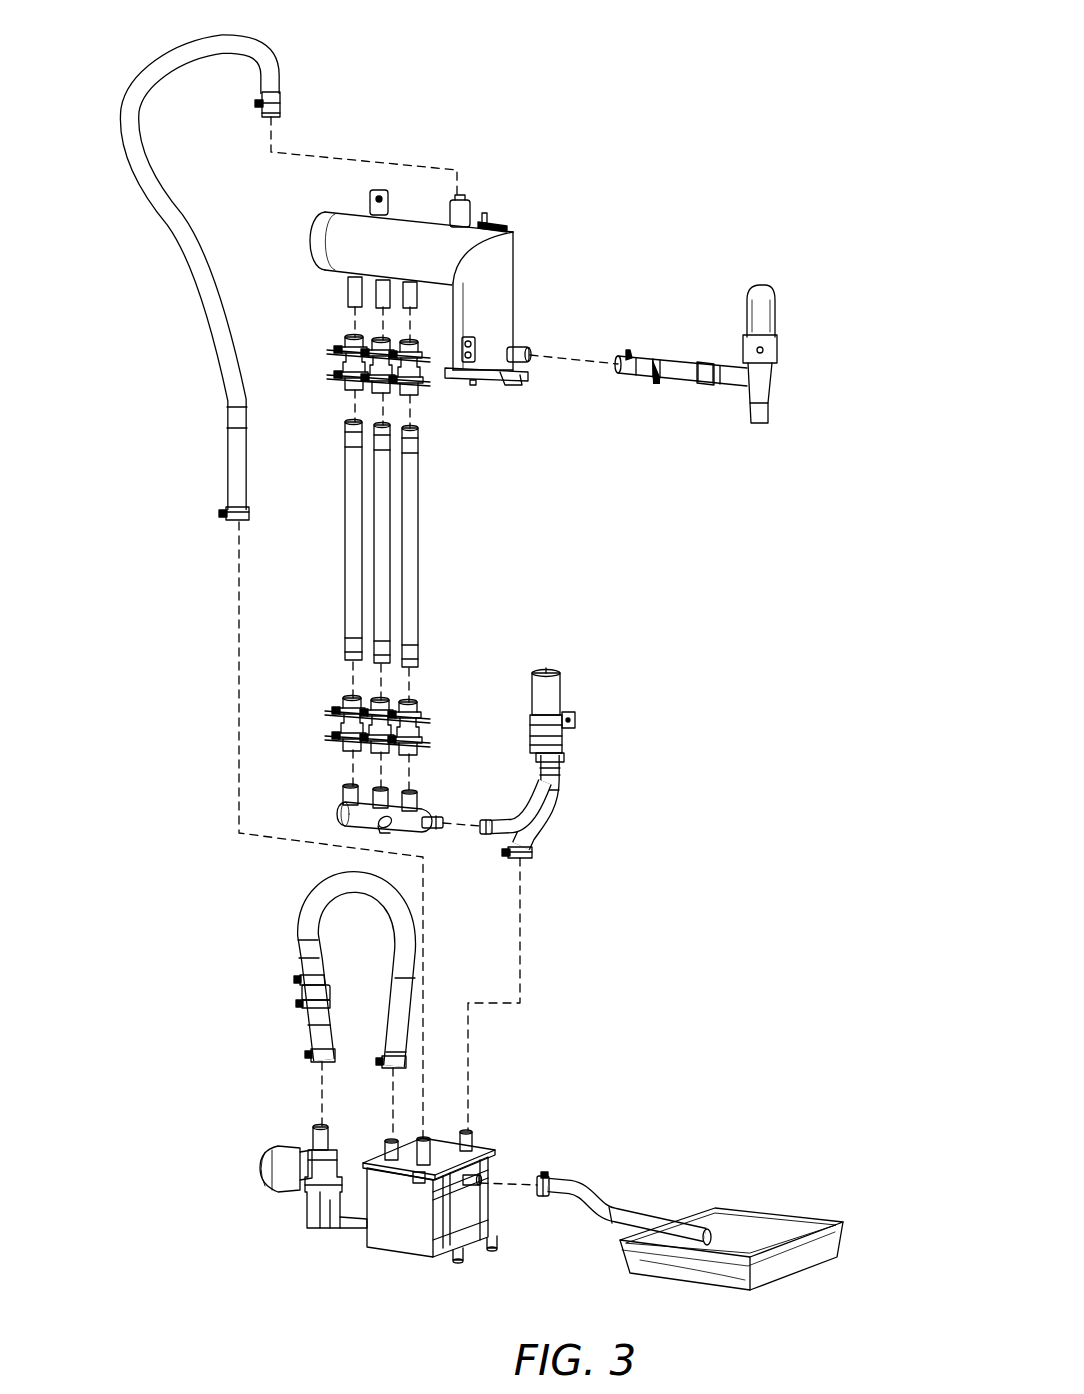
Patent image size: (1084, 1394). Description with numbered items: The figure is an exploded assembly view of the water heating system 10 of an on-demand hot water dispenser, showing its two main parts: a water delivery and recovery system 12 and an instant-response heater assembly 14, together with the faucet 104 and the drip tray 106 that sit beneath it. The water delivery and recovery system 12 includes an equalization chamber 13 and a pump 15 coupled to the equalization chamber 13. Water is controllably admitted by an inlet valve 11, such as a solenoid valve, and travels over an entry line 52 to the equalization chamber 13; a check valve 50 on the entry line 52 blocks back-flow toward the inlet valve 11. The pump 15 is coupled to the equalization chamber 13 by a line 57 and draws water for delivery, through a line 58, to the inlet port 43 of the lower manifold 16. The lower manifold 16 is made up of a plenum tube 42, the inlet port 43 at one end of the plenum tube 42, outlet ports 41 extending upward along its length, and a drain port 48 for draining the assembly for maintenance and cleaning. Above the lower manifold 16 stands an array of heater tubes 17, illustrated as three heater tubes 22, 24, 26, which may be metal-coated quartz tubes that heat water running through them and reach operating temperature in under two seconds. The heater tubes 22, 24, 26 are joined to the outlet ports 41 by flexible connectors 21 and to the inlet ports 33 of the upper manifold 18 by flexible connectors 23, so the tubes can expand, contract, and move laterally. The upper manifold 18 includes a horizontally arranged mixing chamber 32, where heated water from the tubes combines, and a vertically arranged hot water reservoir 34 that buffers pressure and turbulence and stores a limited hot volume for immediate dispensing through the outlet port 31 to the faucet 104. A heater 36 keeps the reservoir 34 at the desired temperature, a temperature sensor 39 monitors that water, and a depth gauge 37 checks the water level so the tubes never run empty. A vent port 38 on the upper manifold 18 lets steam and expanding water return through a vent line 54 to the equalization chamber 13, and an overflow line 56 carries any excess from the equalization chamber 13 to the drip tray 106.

The water heating system 10 is at (813, 172).
The inlet valve 11 is at (262, 1148).
The water delivery and recovery system 12 is at (740, 953).
The equalization chamber 13 is at (497, 1140).
The instant-response heater assembly 14 is at (565, 503).
The pump 15 is at (590, 690).
The lower manifold 16 is at (430, 780).
The array of heater tubes 17 is at (460, 462).
The upper manifold 18 is at (527, 225).
The flexible connectors 21 is at (330, 722).
The heater tube 22 is at (368, 480).
The flexible connectors 23 is at (337, 356).
The heater tube 24 is at (394, 533).
The heater tube 26 is at (420, 580).
The outlet port 31 is at (530, 347).
The mixing chamber 32 is at (335, 245).
The inlet ports 33 is at (340, 288).
The hot water reservoir 34 is at (508, 272).
The heater 36 is at (490, 393).
The depth gauge 37 is at (498, 222).
The vent port 38 is at (446, 215).
The temperature sensor 39 is at (480, 340).
The outlet ports 41 is at (343, 792).
The plenum tube 42 is at (338, 812).
The inlet port 43 is at (440, 818).
The drain port 48 is at (393, 828).
The check valve 50 is at (298, 1000).
The entry line 52 is at (290, 893).
The vent line 54 is at (173, 42).
The overflow line 56 is at (615, 1210).
The line 57 is at (560, 787).
The line 58 is at (517, 820).
The faucet 104 is at (800, 355).
The drip tray 106 is at (790, 1205).